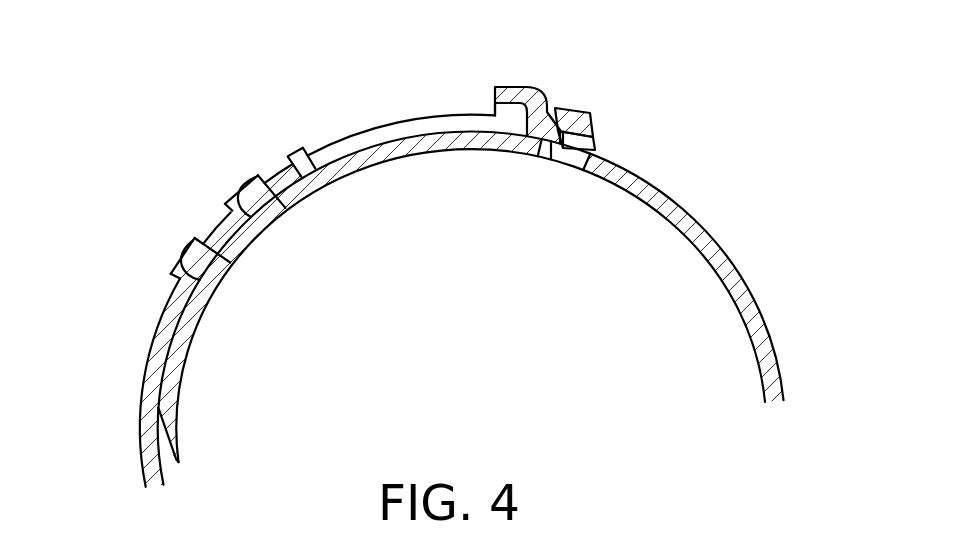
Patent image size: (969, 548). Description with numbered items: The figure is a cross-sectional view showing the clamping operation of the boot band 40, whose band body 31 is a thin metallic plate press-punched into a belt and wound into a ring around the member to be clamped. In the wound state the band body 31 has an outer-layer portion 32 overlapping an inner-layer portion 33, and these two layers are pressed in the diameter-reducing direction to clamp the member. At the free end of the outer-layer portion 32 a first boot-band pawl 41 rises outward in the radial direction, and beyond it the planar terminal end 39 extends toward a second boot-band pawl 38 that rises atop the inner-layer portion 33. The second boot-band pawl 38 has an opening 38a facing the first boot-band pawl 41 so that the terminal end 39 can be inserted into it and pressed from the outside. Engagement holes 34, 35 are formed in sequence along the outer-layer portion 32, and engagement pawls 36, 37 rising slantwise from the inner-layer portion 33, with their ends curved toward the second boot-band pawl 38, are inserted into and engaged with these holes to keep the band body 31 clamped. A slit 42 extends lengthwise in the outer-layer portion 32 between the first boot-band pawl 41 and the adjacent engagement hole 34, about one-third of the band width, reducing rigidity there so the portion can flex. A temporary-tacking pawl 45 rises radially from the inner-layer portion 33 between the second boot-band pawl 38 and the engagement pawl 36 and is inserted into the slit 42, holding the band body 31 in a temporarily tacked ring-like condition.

The band body 31 is at (766, 277).
The outer-layer portion 32 is at (321, 143).
The inner-layer portion 33 is at (446, 137).
The engagement hole 34 is at (226, 206).
The engagement hole 35 is at (181, 287).
The engagement pawl 36 is at (250, 189).
The engagement pawl 37 is at (191, 251).
The second boot-band pawl 38 is at (598, 119).
The opening 38a is at (606, 141).
The terminal end 39 is at (553, 145).
The boot band 40 is at (772, 170).
The first boot-band pawl 41 is at (520, 84).
The slit 42 is at (417, 123).
The temporary-tacking pawl 45 is at (290, 151).